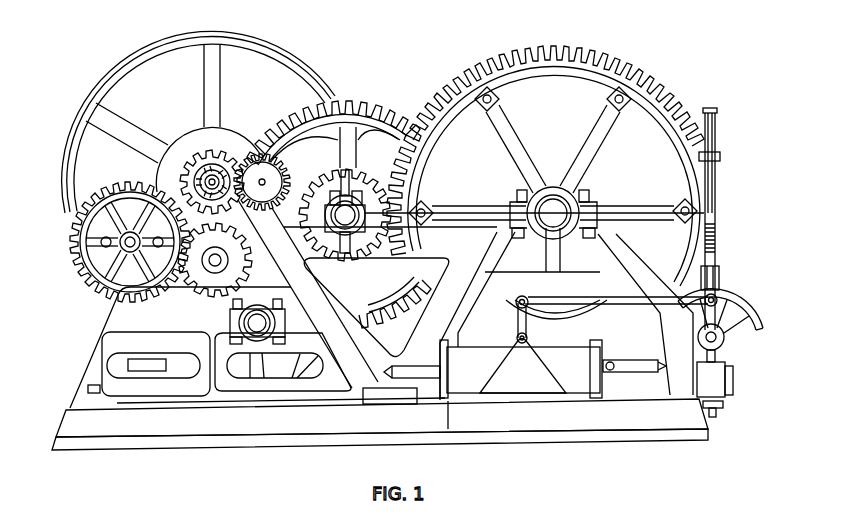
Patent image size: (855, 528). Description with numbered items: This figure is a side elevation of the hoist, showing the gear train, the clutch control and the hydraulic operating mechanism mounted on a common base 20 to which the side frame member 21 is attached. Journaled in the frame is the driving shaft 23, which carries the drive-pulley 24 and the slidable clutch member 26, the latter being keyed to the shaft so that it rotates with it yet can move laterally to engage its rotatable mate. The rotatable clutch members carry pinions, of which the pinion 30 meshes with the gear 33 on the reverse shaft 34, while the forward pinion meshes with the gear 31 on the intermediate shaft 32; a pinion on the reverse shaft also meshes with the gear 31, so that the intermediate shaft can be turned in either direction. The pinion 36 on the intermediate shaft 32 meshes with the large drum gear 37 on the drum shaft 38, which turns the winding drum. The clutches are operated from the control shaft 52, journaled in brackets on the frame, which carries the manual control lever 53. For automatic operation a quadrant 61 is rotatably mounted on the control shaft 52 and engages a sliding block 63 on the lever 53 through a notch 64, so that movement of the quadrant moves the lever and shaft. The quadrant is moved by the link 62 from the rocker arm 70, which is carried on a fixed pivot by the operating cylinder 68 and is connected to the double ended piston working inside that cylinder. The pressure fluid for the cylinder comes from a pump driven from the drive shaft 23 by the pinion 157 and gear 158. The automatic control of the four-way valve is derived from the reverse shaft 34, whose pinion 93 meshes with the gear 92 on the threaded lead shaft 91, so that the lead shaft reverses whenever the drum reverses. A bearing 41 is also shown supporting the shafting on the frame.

The base 20 is at (380, 424).
The side frame member 21 is at (381, 304).
The driving shaft 23 is at (214, 176).
The drive-pulley 24 is at (96, 98).
The slidable clutch member 26 is at (208, 128).
The pinion 30 is at (186, 173).
The gear 31 is at (339, 214).
The intermediate shaft 32 is at (514, 222).
The gear 33 is at (215, 261).
The reverse shaft 34 is at (237, 259).
The pinion 36 is at (345, 215).
The drum gear 37 is at (468, 70).
The drum shaft 38 is at (553, 213).
The bearing 41 is at (257, 321).
The control shaft 52 is at (725, 337).
The manual control lever 53 is at (716, 199).
The quadrant 61 is at (741, 304).
The link 62 is at (603, 302).
The sliding block 63 is at (719, 272).
The notch 64 is at (718, 298).
The operating cylinder 68 is at (525, 369).
The rocker arm 70 is at (529, 316).
The threaded lead shaft 91 is at (110, 272).
The gear 92 is at (77, 262).
The pinion 93 is at (238, 271).
The pinion 157 is at (206, 168).
The gear 158 is at (277, 171).